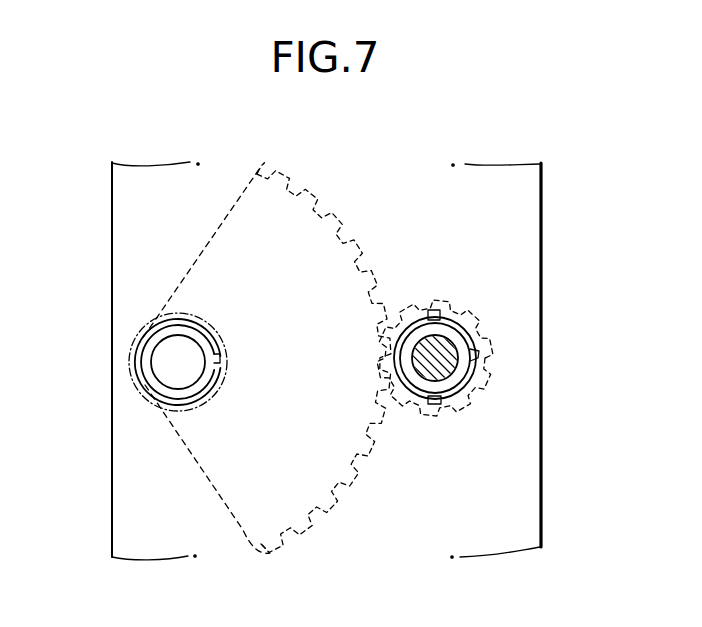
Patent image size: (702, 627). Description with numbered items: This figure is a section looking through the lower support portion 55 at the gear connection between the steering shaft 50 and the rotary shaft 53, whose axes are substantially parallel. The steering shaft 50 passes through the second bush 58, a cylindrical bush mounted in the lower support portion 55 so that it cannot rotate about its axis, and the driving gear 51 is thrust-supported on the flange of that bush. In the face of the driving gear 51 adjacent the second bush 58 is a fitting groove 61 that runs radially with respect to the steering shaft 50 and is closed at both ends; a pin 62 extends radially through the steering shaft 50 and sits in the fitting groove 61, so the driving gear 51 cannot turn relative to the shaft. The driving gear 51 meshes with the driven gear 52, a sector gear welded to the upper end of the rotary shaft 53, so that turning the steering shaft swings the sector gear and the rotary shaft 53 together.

The steering shaft 50 is at (452, 395).
The driving gear 51 is at (484, 396).
The driven gear 52 is at (245, 530).
The rotary shaft 53 is at (165, 362).
The lower support portion 55 is at (513, 232).
The second bush 58 is at (409, 394).
The fitting groove 61 is at (470, 352).
The pin 62 is at (433, 307).